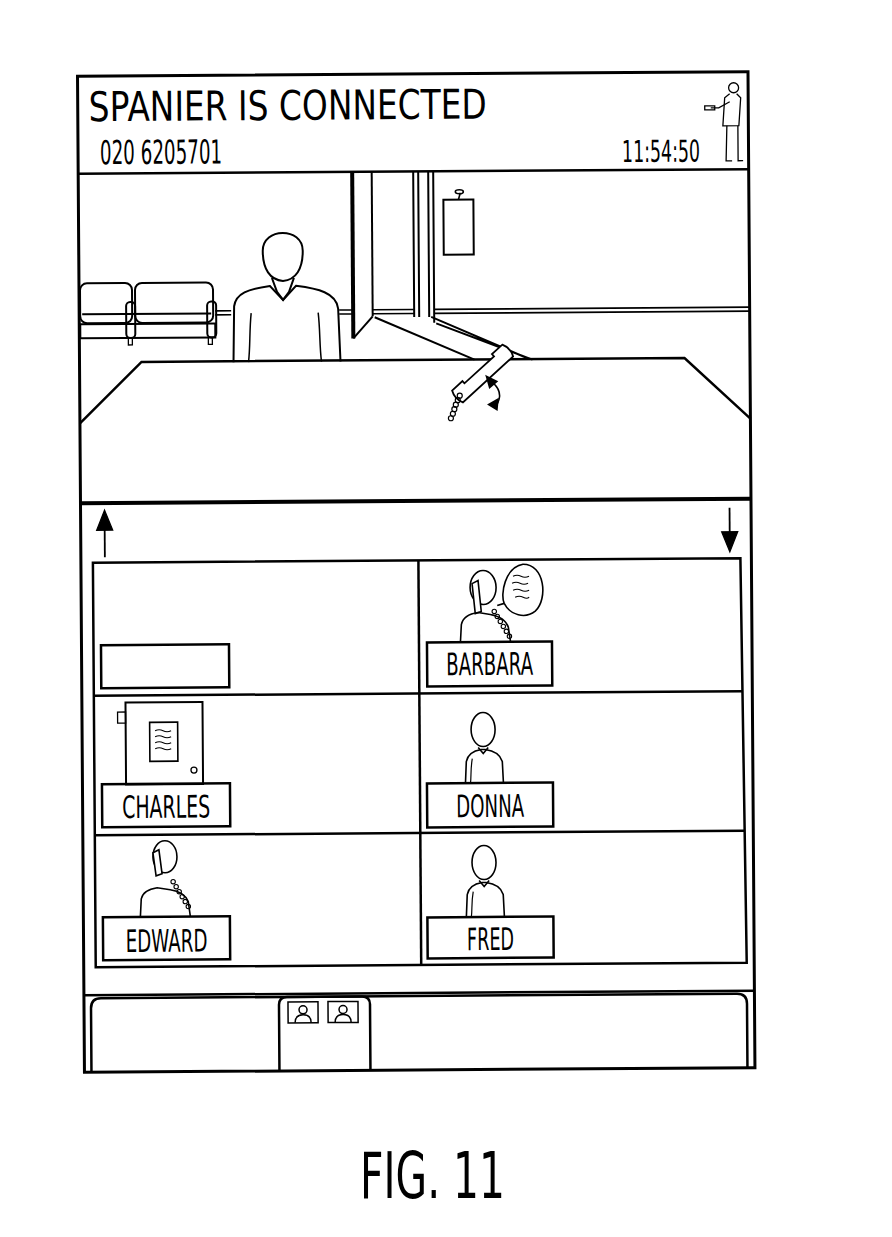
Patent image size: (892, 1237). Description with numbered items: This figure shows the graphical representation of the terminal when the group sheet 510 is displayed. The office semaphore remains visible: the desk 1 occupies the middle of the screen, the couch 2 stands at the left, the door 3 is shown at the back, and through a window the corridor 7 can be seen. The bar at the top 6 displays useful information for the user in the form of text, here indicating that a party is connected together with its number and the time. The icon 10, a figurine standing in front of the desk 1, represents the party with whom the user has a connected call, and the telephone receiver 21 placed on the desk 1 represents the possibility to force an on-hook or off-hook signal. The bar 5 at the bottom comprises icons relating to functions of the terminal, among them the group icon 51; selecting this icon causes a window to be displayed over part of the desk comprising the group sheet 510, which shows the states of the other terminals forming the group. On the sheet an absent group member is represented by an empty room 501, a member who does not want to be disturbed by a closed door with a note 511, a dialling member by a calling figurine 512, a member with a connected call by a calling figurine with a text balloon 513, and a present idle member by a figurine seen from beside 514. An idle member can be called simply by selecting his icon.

The desk 1 is at (746, 463).
The couch 2 is at (162, 297).
The door 3 is at (363, 244).
The bar 5 is at (739, 1040).
The bar at the top 6 is at (702, 82).
The corridor 7 is at (744, 229).
The icon 10 is at (267, 249).
The telephone receiver 21 is at (458, 385).
The group icon 51 is at (742, 541).
The empty room 501 is at (104, 622).
The group sheet 510 is at (742, 630).
The closed door with a note 511 is at (124, 755).
The calling figurine 512 is at (138, 894).
The calling figurine with a text balloon 513 is at (548, 608).
The figurine seen from beside 514 is at (503, 763).